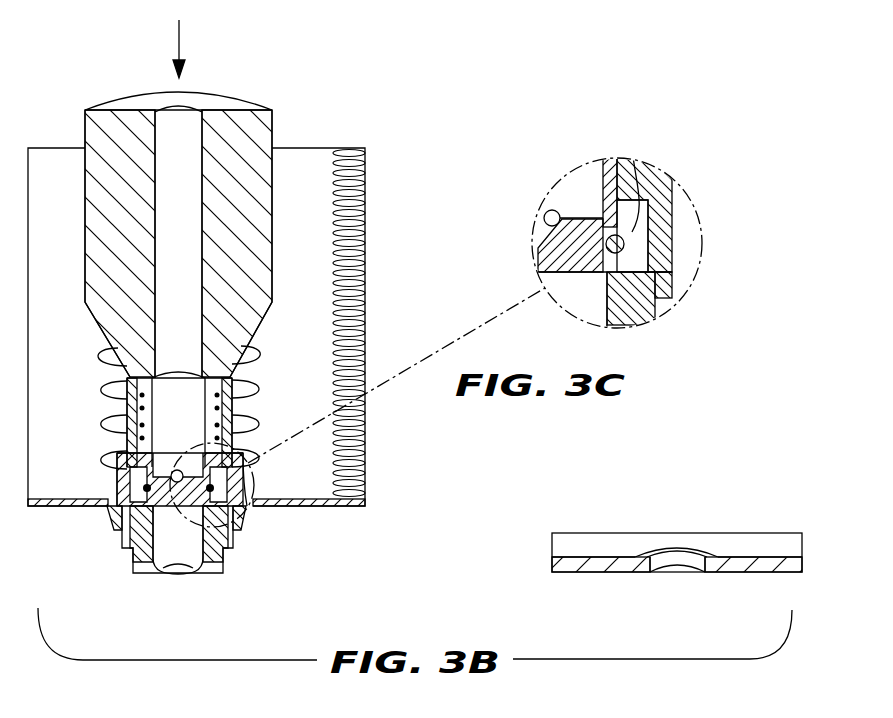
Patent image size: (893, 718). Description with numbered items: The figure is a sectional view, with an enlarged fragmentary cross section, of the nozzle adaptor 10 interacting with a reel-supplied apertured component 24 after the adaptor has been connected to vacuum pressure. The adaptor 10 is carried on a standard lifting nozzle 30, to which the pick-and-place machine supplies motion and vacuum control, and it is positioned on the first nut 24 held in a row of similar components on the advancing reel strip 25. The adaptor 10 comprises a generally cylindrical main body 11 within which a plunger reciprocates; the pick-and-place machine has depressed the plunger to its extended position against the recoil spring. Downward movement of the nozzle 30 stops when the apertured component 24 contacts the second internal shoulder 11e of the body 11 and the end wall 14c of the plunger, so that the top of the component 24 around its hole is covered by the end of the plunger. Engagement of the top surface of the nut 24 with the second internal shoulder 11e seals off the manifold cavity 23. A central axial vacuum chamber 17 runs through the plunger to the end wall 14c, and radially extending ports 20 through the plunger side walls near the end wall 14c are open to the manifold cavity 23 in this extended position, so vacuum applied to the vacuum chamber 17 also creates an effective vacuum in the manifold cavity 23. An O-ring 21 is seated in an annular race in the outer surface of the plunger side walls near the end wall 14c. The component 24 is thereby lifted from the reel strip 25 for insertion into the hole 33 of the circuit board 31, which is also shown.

In FIG. 3B, the lifting nozzle 30 is at (90, 130).
In FIG. 3B, the reel strip 25 is at (308, 160).
In FIG. 3B, the nozzle adaptor 10 is at (130, 448).
In FIG. 3B, the apertured component 24 is at (138, 527).
In FIG. 3C, the apertured component 24 is at (643, 312).
In FIG. 3B, the circuit board 31 is at (577, 538).
In FIG. 3B, the hole 33 is at (680, 560).
In FIG. 3C, the end wall 14c is at (578, 260).
In FIG. 3C, the vacuum chamber 17 is at (565, 198).
In FIG. 3C, the ports 20 is at (603, 215).
In FIG. 3C, the main body 11 is at (662, 220).
In FIG. 3C, the manifold cavity 23 is at (640, 243).
In FIG. 3C, the O-ring 21 is at (632, 165).
In FIG. 3C, the second internal shoulder 11e is at (680, 292).